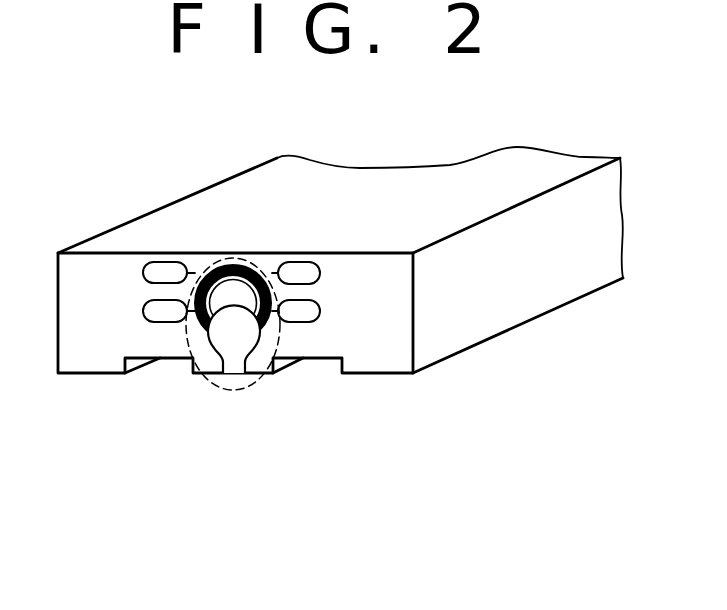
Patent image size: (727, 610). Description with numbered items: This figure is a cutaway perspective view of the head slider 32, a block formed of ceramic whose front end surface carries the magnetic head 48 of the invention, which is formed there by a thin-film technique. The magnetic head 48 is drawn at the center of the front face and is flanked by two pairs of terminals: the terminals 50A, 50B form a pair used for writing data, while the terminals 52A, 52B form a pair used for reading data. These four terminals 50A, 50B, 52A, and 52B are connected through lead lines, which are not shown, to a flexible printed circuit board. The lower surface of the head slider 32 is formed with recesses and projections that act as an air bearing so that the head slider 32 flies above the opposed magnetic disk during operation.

The head slider 32 is at (272, 185).
The magnetic head 48 is at (228, 390).
The terminal for writing data 50A is at (152, 265).
The terminal for writing data 50B is at (307, 272).
The terminal for reading data 52A is at (165, 315).
The terminal for reading data 52B is at (303, 315).